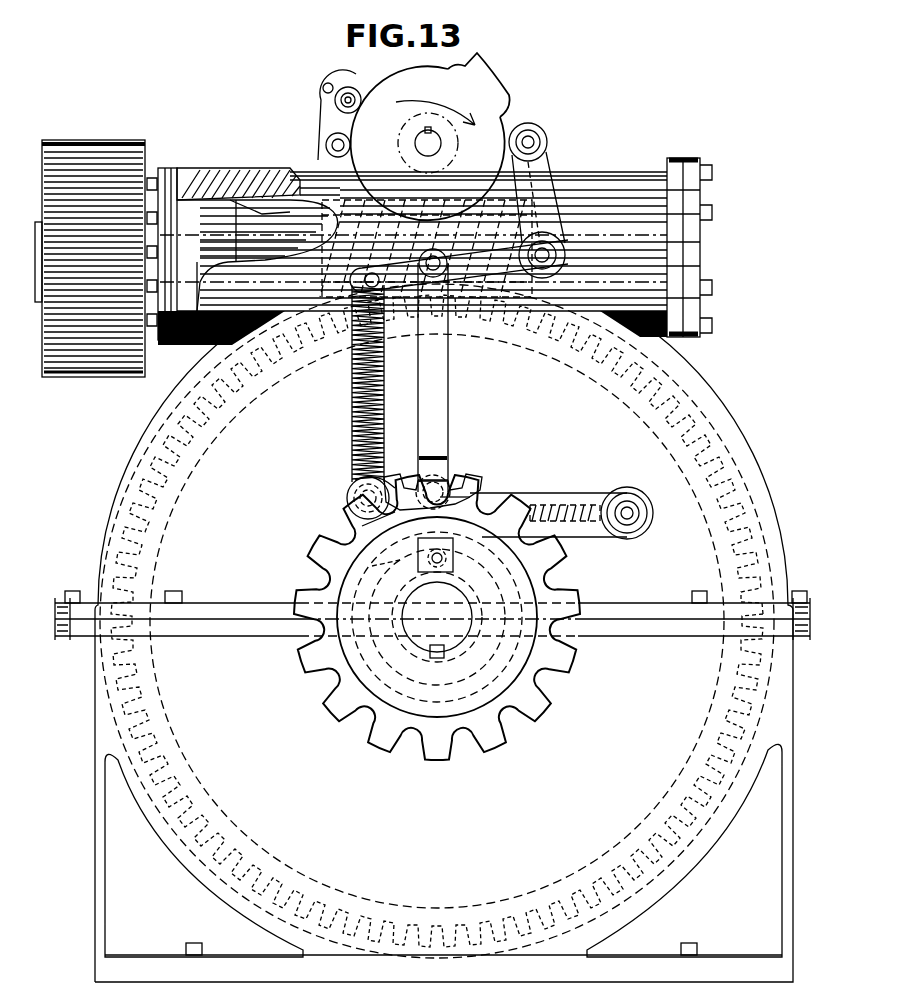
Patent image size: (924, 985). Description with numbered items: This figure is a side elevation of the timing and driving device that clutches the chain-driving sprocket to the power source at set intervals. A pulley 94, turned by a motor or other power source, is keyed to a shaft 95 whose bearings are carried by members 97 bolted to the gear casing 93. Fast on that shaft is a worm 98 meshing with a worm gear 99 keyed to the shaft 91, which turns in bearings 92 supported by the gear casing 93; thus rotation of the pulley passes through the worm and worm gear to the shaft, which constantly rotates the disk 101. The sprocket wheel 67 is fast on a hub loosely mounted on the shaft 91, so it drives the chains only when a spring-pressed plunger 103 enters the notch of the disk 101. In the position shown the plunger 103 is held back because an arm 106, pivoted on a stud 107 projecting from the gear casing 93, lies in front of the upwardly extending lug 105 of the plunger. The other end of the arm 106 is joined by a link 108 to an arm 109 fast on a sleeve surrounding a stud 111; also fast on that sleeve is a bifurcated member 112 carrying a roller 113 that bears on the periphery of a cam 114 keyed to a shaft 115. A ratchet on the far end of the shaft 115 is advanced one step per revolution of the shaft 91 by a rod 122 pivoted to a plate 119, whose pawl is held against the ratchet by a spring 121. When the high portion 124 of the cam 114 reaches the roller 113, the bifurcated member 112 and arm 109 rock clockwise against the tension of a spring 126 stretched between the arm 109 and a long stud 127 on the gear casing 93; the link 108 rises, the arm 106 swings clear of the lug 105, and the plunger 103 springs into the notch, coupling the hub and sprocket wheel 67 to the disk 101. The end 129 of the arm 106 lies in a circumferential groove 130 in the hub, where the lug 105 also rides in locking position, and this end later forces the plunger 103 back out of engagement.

The sprocket wheel 67 is at (498, 738).
The shaft 91 is at (448, 620).
The bearings 92 is at (470, 588).
The gear casing 93 is at (103, 893).
The pulley 94 is at (76, 165).
The shaft 95 is at (170, 215).
The members 97 is at (252, 215).
The worm 98 is at (408, 300).
The worm gear 99 is at (205, 848).
The disk 101 is at (525, 592).
The plunger 103 is at (442, 550).
The lug 105 is at (440, 522).
The arm 106 is at (524, 500).
The stud 107 is at (635, 535).
The link 108 is at (442, 404).
The arm 109 is at (508, 285).
The stud 111 is at (555, 256).
The bifurcated member 112 is at (548, 190).
The roller 113 is at (538, 134).
The cam 114 is at (488, 97).
The shaft 115 is at (416, 140).
The plate 119 is at (326, 146).
The spring 121 is at (332, 92).
The rod 122 is at (345, 180).
The high portion 124 is at (482, 66).
The spring 126 is at (352, 380).
The long stud 127 is at (358, 496).
The end of arm 129 is at (362, 526).
The groove 130 is at (372, 566).